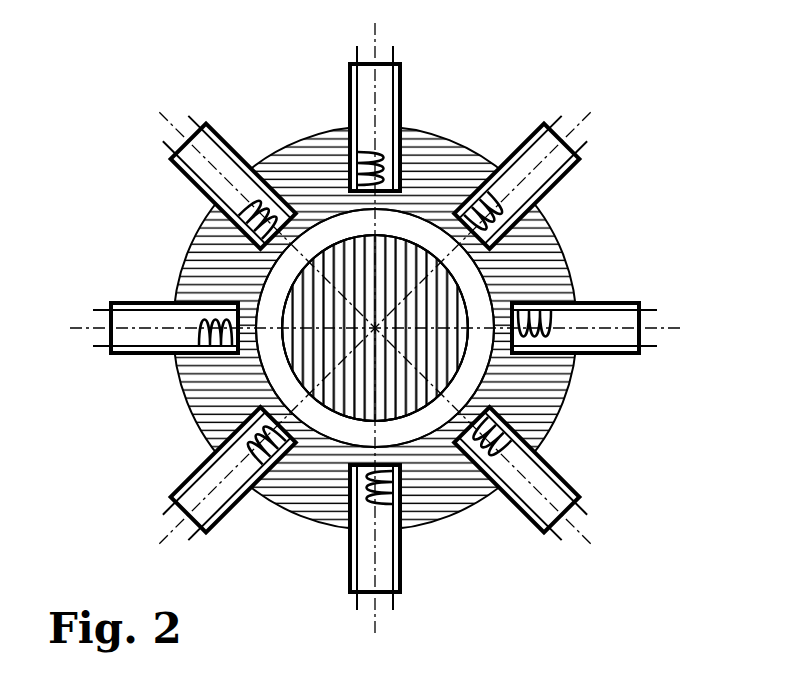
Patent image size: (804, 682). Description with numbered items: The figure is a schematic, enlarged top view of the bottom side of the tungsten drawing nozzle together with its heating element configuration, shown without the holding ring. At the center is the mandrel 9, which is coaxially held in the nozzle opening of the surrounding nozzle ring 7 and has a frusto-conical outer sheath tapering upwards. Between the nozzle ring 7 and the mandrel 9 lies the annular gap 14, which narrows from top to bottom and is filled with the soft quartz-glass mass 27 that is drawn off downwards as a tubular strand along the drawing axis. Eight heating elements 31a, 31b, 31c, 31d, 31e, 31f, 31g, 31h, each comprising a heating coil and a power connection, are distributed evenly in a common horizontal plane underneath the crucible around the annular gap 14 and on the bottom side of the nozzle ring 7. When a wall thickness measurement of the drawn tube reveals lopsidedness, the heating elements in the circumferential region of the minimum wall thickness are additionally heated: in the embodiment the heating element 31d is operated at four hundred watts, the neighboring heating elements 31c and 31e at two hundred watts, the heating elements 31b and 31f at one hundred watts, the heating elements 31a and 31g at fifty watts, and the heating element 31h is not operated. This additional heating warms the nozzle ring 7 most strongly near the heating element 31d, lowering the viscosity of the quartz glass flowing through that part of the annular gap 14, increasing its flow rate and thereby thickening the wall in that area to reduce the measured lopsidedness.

The nozzle ring 7 is at (223, 407).
The mandrel 9 is at (305, 351).
The annular gap 14 is at (423, 418).
The quartz-glass mass 27 is at (375, 328).
The heating element 31a is at (378, 100).
The heating element 31b is at (550, 155).
The heating element 31c is at (598, 320).
The heating element 31d is at (552, 472).
The heating element 31e is at (402, 570).
The heating element 31f is at (213, 490).
The heating element 31g is at (145, 310).
The heating element 31h is at (212, 137).